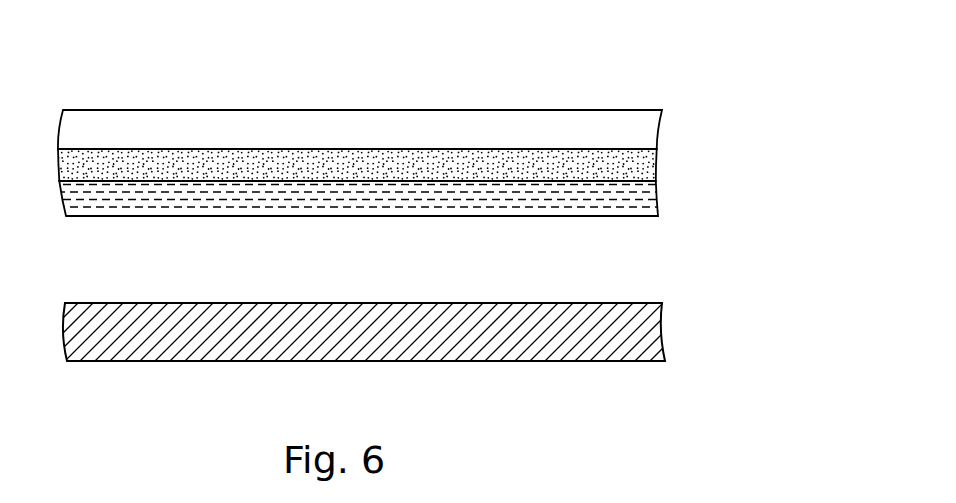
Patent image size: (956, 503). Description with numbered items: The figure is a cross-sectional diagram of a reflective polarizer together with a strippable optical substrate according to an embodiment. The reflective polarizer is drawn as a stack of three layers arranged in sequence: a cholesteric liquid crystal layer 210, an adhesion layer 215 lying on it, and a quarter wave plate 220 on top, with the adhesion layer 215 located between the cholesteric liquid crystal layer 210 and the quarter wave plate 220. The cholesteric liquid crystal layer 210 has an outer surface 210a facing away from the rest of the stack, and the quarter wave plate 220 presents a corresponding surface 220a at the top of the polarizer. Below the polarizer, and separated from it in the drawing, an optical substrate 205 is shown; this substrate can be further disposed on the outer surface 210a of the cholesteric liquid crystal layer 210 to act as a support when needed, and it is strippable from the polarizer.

The optical substrate 205 is at (650, 330).
The cholesteric liquid crystal layer 210 is at (655, 200).
The outer surface of the cholesteric liquid crystal layer 210a is at (613, 217).
The adhesion layer 215 is at (650, 163).
The quarter wave plate 220 is at (657, 126).
The upper surface of upper layer 220a is at (611, 110).